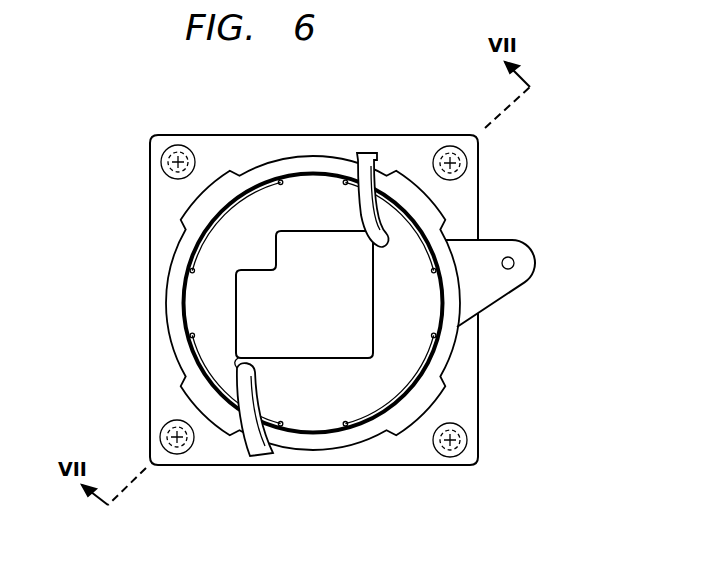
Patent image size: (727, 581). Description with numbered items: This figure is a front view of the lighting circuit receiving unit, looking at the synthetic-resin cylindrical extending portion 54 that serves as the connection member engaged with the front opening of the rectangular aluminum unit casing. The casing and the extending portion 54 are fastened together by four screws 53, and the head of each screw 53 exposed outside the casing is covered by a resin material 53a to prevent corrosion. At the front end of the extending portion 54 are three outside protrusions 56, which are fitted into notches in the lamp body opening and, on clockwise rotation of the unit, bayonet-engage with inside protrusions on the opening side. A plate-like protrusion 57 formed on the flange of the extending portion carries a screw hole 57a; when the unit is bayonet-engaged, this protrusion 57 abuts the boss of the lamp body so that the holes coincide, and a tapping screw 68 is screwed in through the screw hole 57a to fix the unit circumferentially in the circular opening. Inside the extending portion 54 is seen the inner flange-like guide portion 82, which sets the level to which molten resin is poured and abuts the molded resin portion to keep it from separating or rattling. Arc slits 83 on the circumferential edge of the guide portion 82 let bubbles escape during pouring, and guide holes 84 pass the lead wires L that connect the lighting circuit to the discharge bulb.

The screws 53 is at (178, 145).
The resin material 53a is at (162, 155).
The cylindrical extending portion 54 is at (376, 303).
The outside protrusions 56 is at (405, 170).
The plate-like protrusion 57 is at (532, 283).
The screw hole 57a is at (513, 262).
The tapping screw 68 is at (640, 1).
The guide portion 82 is at (413, 328).
The arc slits 83 is at (257, 186).
The guide holes 84 is at (366, 152).
The lead wires L is at (360, 154).